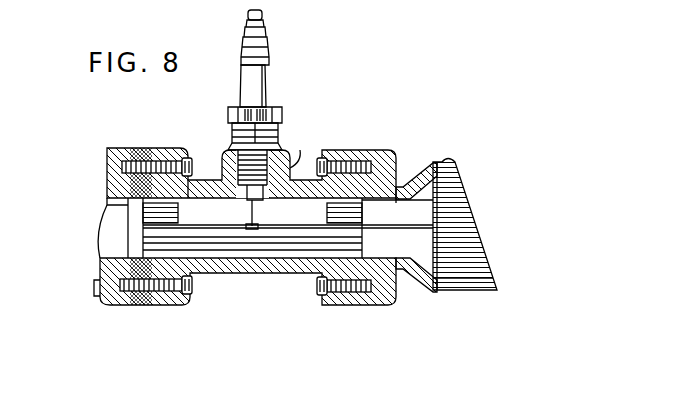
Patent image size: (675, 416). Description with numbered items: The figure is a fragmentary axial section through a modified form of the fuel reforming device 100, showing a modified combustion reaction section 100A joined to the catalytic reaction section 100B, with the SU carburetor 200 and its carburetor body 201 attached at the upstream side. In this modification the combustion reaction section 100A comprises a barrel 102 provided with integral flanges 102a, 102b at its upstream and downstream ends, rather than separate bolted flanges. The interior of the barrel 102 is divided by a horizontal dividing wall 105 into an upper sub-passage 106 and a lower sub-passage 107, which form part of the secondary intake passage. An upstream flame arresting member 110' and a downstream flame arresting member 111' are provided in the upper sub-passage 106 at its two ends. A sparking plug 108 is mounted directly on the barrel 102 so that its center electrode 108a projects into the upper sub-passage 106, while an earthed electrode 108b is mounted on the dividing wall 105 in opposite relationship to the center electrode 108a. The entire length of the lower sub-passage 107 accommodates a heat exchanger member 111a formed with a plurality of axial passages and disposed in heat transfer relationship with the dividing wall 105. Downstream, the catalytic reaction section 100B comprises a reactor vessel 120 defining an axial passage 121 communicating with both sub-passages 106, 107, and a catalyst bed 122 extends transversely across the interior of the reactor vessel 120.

The fuel reforming device 100 is at (467, 362).
The combustion reaction section 100A is at (357, 326).
The catalytic reaction section 100B is at (487, 318).
The barrel 102 is at (203, 273).
The upstream integral flange 102a is at (168, 297).
The downstream integral flange 102b is at (352, 297).
The dividing wall 105 is at (105, 212).
The upper sub-passage 106 is at (300, 150).
The lower sub-passage 107 is at (238, 255).
The sparking plug 108 is at (262, 103).
The center electrode 108a is at (246, 207).
The earthed electrode 108b is at (255, 203).
The upstream flame arresting member 110' is at (201, 158).
The downstream flame arresting member 111' is at (381, 159).
The heat exchanger member 111a is at (292, 247).
The reactor vessel 120 is at (427, 177).
The axial passage 121 is at (383, 200).
The catalyst bed 122 is at (473, 270).
The SU carburetor 200 is at (107, 305).
The carburetor body 201 is at (98, 265).